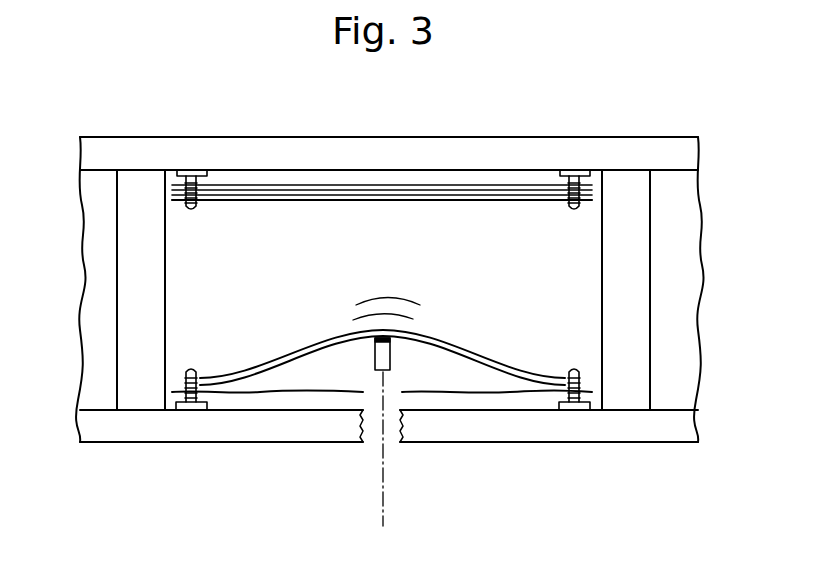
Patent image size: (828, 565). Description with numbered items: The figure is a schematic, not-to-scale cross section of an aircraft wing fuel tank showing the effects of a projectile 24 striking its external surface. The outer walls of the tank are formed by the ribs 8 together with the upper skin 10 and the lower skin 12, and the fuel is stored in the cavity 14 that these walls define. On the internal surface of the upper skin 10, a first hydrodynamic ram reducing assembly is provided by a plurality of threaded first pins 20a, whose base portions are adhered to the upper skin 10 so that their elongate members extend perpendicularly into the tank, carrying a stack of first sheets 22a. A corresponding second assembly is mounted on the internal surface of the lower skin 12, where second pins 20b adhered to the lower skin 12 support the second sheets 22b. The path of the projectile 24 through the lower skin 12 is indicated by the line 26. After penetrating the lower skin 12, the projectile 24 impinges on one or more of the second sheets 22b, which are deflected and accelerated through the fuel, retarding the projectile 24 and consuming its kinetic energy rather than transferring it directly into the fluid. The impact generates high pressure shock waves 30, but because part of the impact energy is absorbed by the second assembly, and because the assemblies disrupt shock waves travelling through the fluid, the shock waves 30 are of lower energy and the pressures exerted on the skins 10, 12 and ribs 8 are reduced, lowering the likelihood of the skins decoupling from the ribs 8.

The ribs 8 is at (130, 287).
The upper skin 10 is at (496, 146).
The lower skin 12 is at (142, 426).
The cavity 14 is at (392, 255).
The first pins 20a is at (190, 212).
The second pins 20b is at (193, 366).
The first sheets 22a is at (268, 200).
The second sheets 22b is at (444, 340).
The projectile 24 is at (372, 355).
The path of the projectile 26 is at (383, 519).
The shock waves 30 is at (350, 303).